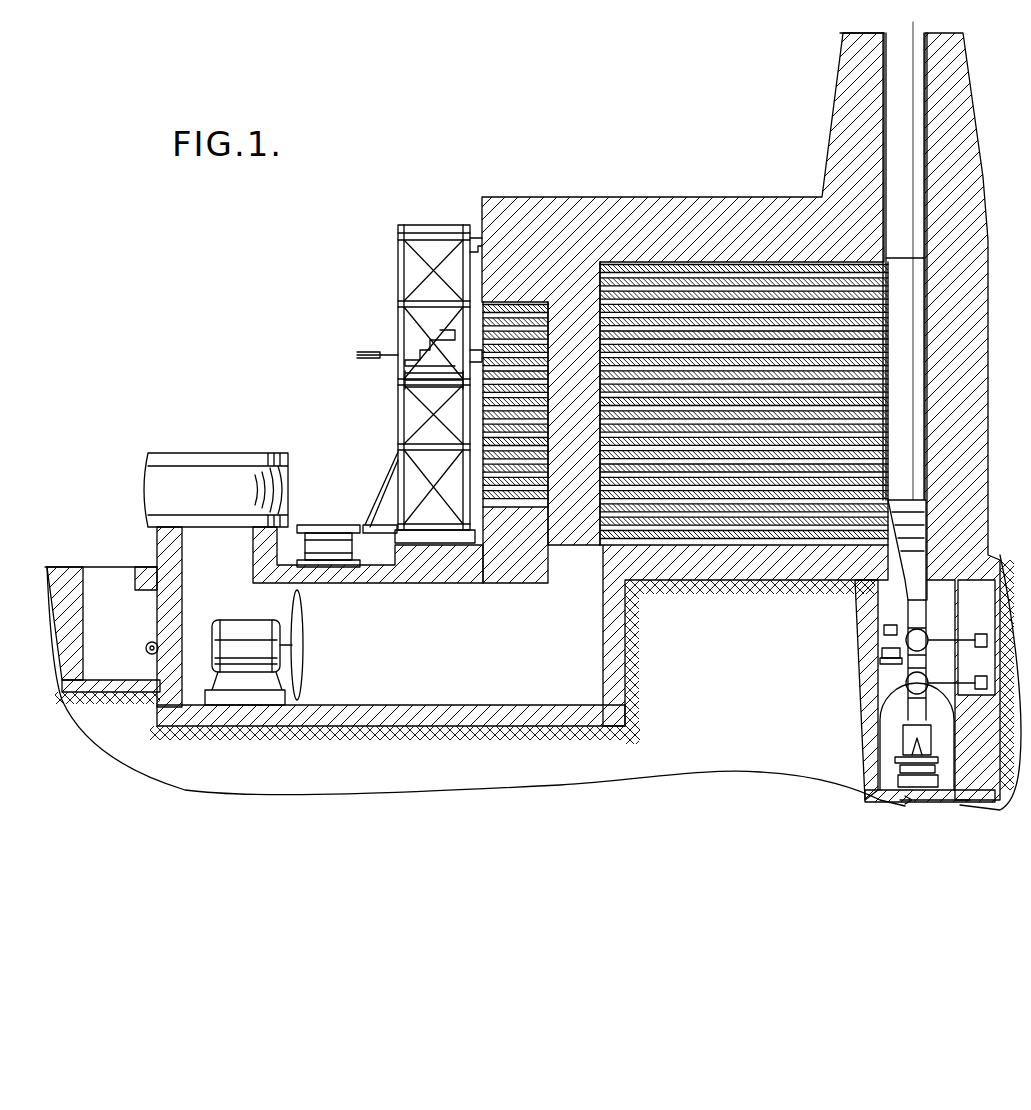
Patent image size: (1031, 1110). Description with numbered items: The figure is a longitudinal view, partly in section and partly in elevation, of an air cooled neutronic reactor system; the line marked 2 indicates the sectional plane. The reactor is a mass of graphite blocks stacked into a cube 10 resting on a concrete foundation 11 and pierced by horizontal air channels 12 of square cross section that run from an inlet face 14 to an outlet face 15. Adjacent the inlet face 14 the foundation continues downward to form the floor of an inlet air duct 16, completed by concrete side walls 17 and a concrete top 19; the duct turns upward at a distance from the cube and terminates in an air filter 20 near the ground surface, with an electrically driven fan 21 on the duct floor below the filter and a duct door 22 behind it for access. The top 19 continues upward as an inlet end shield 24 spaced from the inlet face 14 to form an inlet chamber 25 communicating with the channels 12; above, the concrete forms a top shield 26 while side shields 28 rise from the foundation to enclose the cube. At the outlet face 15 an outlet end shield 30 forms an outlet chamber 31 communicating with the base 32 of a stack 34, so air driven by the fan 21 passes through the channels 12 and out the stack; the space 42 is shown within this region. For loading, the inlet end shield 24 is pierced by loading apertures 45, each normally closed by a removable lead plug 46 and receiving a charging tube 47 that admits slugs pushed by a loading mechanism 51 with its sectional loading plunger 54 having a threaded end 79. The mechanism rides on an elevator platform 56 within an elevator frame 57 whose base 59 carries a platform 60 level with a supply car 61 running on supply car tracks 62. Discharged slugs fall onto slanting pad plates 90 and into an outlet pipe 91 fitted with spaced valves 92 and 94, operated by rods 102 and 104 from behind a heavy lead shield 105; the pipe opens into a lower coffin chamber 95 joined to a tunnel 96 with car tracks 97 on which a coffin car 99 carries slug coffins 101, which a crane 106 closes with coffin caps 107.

The section line 2 is at (896, 32).
The cube 10 is at (688, 262).
The concrete foundation 11 is at (722, 583).
The horizontal air channels 12 is at (612, 485).
The inlet face 14 is at (599, 455).
The outlet face 15 is at (895, 334).
The inlet air duct 16 is at (503, 683).
The concrete side walls 17 is at (603, 650).
The concrete top 19 is at (418, 578).
The air filter 20 is at (235, 468).
The fan 21 is at (305, 660).
The duct door 22 is at (160, 650).
The inlet end shield 24 is at (548, 565).
The inlet chamber 25 is at (586, 436).
The top shield 26 is at (598, 215).
The side shields 28 is at (548, 290).
The outlet end shield 30 is at (968, 392).
The outlet chamber 31 is at (905, 427).
The base of stack 32 is at (965, 160).
The stack 34 is at (834, 44).
The space 42 is at (740, 412).
The loading apertures 45 is at (546, 388).
The removable lead plug 46 is at (546, 318).
The charging tube 47 is at (546, 368).
The loading mechanism 51 is at (440, 340).
The loading plunger 54 is at (378, 350).
The elevator platform 56 is at (420, 390).
The elevator frame 57 is at (398, 267).
The base of elevator frame 59 is at (450, 536).
The platform 60 is at (380, 497).
The supply car 61 is at (337, 502).
The supply car tracks 62 is at (335, 566).
The threaded end 79 is at (360, 357).
The pad plates 90 is at (910, 538).
The outlet pipe 91 is at (912, 607).
The valve 92 is at (928, 636).
The valve 94 is at (900, 680).
The lower coffin chamber 95 is at (875, 622).
The tunnel 96 is at (903, 712).
The car tracks 97 is at (896, 780).
The coffin car 99 is at (898, 766).
The slug coffins 101 is at (903, 740).
The rod 102 is at (962, 630).
The rod 104 is at (962, 672).
The lead shield 105 is at (977, 637).
The crane 106 is at (880, 633).
The coffin caps 107 is at (880, 657).